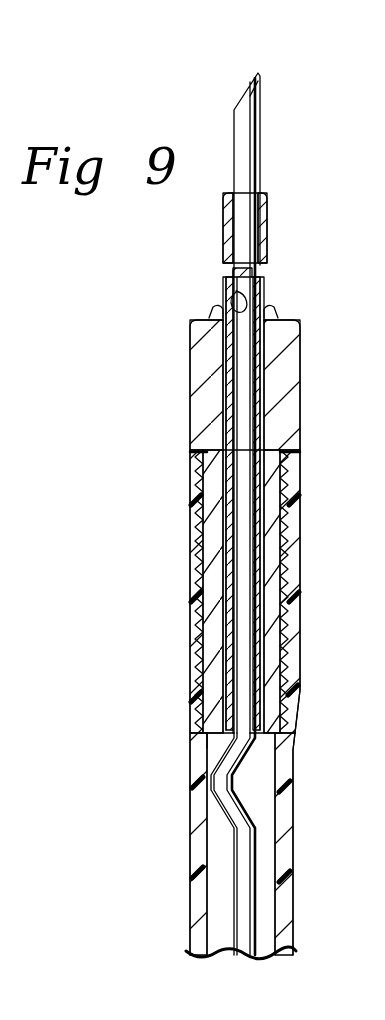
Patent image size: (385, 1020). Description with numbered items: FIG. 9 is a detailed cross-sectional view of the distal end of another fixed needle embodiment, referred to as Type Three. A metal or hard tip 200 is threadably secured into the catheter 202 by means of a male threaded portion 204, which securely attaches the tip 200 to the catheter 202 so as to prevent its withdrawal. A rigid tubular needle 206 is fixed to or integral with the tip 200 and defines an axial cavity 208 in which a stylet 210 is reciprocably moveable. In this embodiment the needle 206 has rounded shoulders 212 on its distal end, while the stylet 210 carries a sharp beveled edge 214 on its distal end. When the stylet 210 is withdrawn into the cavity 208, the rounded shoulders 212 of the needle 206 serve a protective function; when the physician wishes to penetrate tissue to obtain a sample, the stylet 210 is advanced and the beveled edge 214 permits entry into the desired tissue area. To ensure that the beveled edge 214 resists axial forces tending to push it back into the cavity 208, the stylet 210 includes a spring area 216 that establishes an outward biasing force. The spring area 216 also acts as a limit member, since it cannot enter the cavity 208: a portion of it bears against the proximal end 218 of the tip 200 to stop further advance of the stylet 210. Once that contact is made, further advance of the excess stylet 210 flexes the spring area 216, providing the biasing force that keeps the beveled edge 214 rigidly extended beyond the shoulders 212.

The tip 200 is at (290, 362).
The catheter 202 is at (287, 830).
The male threaded portion 204 is at (212, 550).
The rigid tubular needle 206 is at (262, 293).
The axial cavity 208 is at (236, 291).
The stylet 210 is at (247, 157).
The rounded shoulders 212 is at (230, 195).
The beveled edge 214 is at (262, 74).
The spring area 216 is at (252, 771).
The end 218 is at (207, 747).